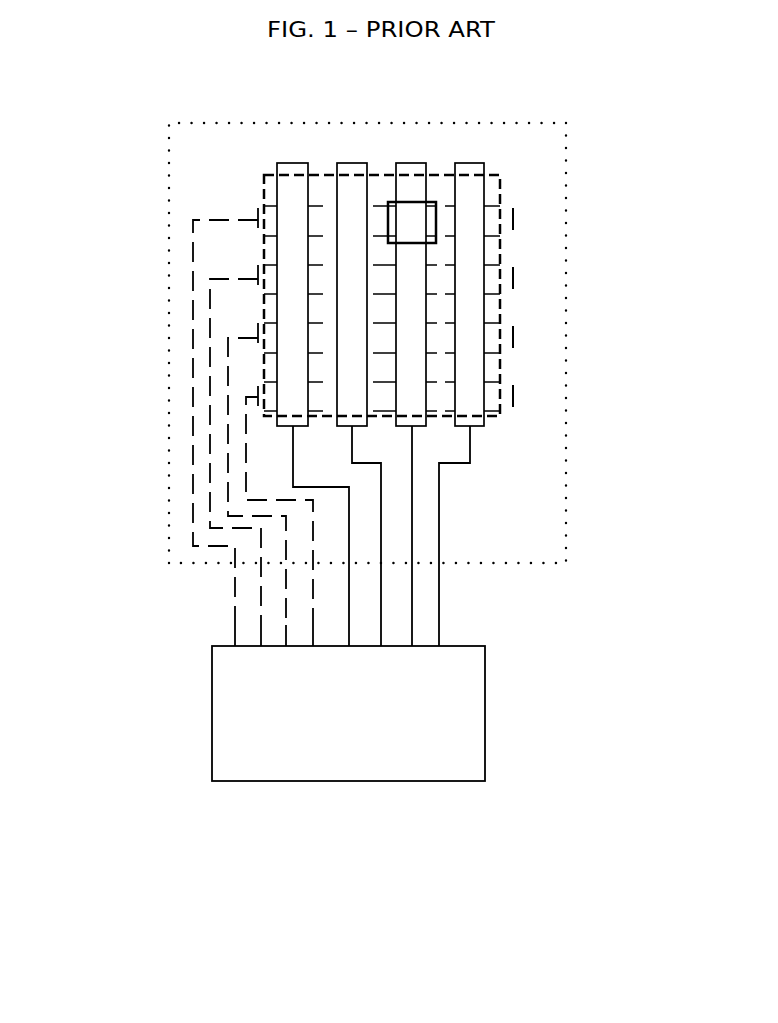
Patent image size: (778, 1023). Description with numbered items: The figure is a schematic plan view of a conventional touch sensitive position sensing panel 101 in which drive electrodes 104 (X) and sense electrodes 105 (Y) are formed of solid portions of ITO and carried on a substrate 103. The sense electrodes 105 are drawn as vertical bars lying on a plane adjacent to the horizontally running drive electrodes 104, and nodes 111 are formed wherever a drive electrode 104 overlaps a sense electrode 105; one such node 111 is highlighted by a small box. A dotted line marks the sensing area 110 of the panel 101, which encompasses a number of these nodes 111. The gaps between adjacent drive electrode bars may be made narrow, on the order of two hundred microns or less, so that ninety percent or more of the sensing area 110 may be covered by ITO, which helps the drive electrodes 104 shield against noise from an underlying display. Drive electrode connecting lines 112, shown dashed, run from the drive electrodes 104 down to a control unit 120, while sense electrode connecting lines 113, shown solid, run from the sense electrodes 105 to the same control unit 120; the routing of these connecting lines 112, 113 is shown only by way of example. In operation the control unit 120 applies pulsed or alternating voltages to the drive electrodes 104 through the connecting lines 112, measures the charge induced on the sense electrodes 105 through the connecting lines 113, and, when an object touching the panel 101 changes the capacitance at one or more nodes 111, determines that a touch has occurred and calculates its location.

The position sensing panel 101 is at (132, 119).
The substrate 103 is at (553, 122).
The drive electrodes 104 is at (273, 218).
The sense electrodes 105 is at (478, 162).
The sensing area 110 is at (505, 194).
The node 111 is at (437, 235).
The drive electrode connecting lines 112 is at (218, 277).
The sense electrode connecting lines 113 is at (412, 471).
The control unit 120 is at (408, 781).